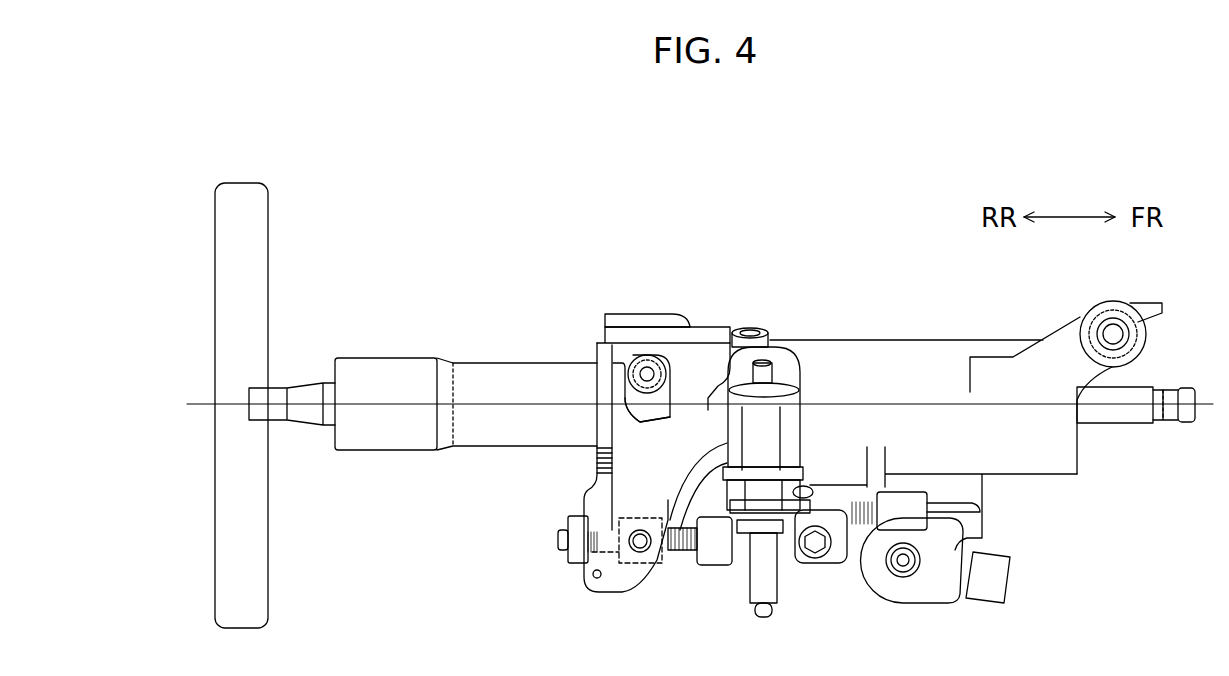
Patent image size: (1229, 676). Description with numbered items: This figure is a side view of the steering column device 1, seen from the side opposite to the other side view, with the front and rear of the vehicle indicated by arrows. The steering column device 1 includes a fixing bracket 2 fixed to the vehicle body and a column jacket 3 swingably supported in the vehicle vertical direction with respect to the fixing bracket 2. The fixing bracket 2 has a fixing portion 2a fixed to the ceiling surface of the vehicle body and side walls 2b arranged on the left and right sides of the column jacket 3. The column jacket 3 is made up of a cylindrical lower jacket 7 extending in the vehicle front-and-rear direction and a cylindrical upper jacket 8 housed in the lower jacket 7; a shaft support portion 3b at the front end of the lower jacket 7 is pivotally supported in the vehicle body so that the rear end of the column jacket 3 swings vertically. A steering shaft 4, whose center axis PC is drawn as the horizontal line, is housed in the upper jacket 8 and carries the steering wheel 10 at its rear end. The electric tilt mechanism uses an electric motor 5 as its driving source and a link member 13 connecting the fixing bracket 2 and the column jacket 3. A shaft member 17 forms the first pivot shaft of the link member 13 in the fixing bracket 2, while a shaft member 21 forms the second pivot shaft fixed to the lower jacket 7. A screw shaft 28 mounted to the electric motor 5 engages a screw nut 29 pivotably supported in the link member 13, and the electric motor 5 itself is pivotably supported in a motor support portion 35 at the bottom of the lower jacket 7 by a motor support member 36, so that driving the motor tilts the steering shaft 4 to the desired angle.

The steering column device 1 is at (862, 222).
The fixing bracket 2 is at (630, 312).
The fixing portion 2a is at (698, 335).
The side wall 2b is at (643, 420).
The column jacket 3 is at (994, 414).
The shaft support portion 3b is at (1135, 330).
The steering shaft 4 is at (297, 424).
The electric motor 5 is at (800, 437).
The lower jacket 7 is at (1047, 470).
The upper jacket 8 is at (381, 367).
The steering wheel 10 is at (258, 258).
The link member 13 is at (597, 462).
The shaft member 17 is at (647, 355).
The shaft member 21 is at (752, 330).
The screw shaft 28 is at (684, 553).
The screw nut 29 is at (632, 565).
The motor support portion 35 is at (840, 555).
The motor support member 36 is at (815, 545).
The center axis PC is at (483, 410).